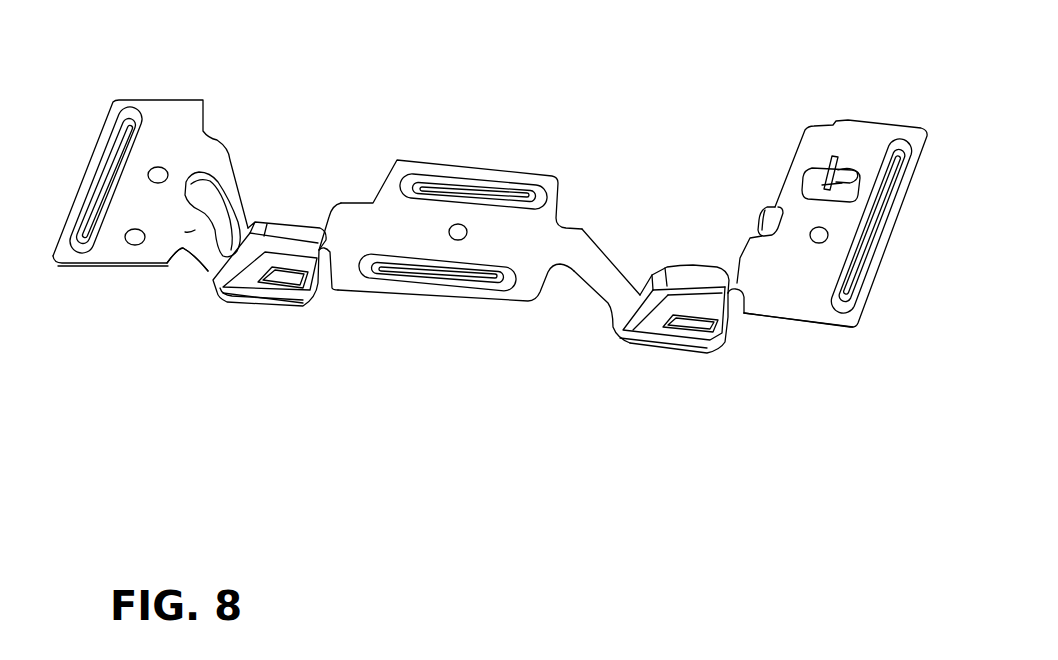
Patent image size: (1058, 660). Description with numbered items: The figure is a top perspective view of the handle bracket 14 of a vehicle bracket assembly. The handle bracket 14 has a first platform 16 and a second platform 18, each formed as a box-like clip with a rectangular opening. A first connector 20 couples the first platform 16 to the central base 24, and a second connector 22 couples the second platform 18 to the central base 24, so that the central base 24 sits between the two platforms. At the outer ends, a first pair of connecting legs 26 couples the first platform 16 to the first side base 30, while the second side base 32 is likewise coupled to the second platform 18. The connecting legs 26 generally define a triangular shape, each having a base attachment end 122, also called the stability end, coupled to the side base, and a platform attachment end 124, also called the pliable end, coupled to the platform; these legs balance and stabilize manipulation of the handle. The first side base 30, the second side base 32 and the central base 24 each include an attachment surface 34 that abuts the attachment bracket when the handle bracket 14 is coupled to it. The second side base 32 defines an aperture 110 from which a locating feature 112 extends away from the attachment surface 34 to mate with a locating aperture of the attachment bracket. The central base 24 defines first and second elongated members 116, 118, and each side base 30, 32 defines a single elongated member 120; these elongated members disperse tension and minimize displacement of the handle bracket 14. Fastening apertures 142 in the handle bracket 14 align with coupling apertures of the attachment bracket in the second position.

The handle bracket 14 is at (865, 120).
The first platform 16 is at (265, 282).
The second platform 18 is at (687, 310).
The first connector 20 is at (333, 282).
The second connector 22 is at (595, 273).
The central base 24 is at (503, 237).
The first pair of connecting legs 26 is at (230, 190).
The first side base 30 is at (163, 100).
The second side base 32 is at (773, 320).
The attachment surface 34 is at (158, 147).
The aperture 110 is at (808, 182).
The locating feature 112 is at (817, 193).
The first elongated member 116 is at (468, 190).
The second elongated member 118 is at (433, 277).
The elongated member 120 is at (110, 175).
The base attachment end 122 is at (195, 230).
The platform attachment end 124 is at (225, 258).
The fastening apertures 142 is at (823, 237).